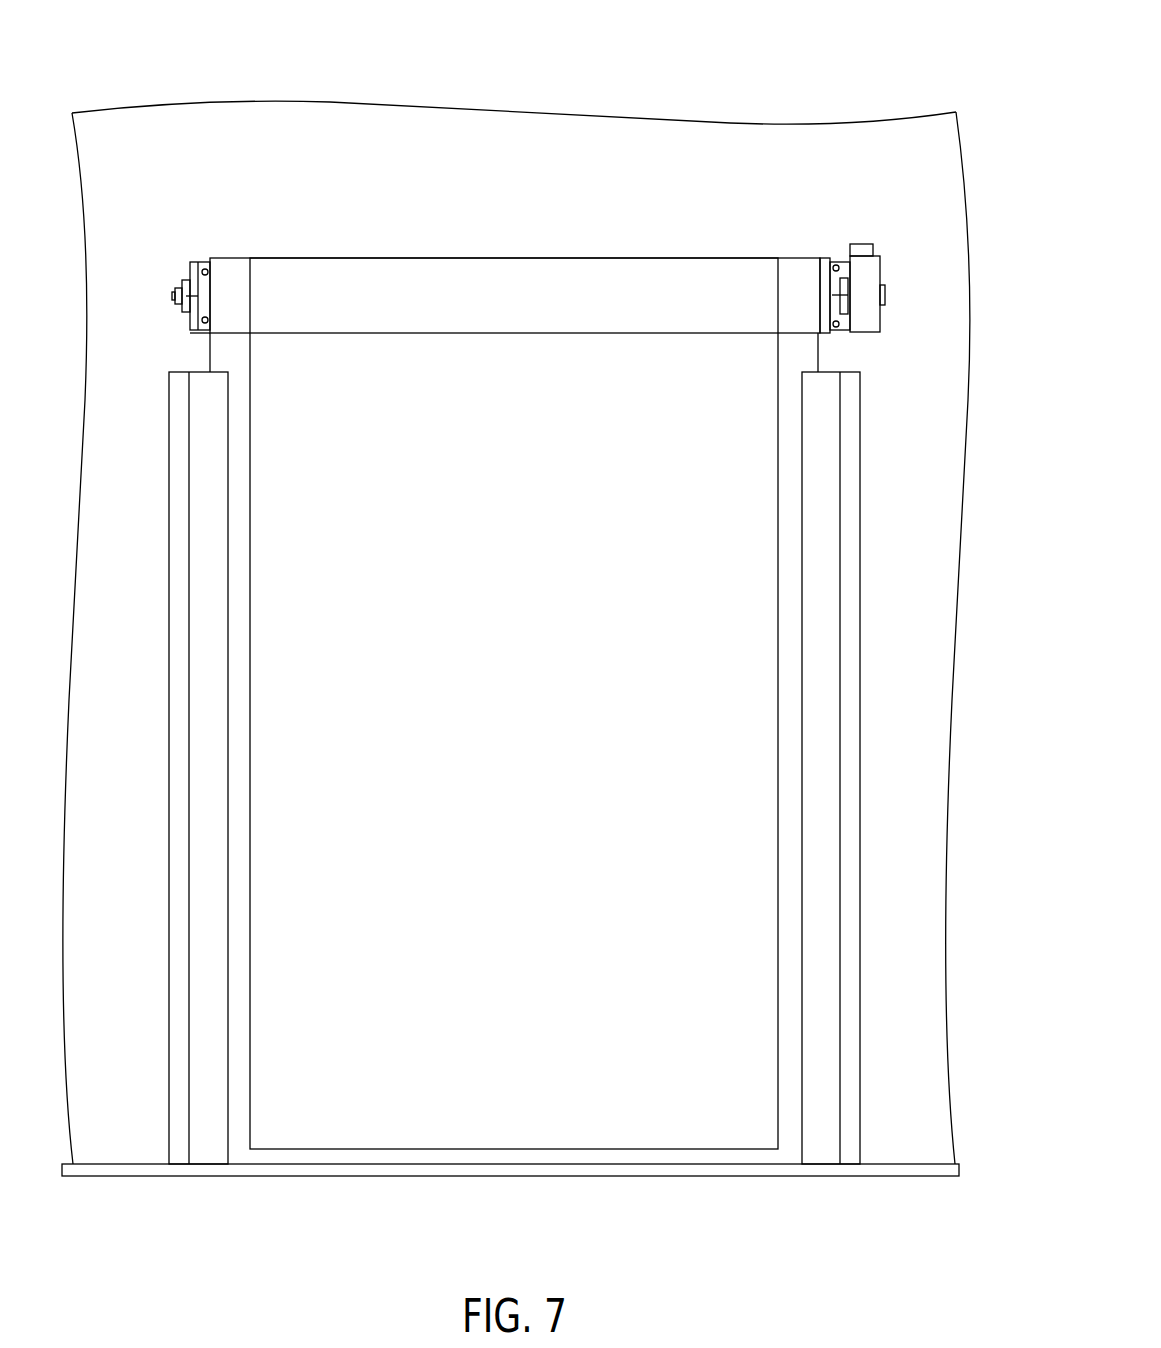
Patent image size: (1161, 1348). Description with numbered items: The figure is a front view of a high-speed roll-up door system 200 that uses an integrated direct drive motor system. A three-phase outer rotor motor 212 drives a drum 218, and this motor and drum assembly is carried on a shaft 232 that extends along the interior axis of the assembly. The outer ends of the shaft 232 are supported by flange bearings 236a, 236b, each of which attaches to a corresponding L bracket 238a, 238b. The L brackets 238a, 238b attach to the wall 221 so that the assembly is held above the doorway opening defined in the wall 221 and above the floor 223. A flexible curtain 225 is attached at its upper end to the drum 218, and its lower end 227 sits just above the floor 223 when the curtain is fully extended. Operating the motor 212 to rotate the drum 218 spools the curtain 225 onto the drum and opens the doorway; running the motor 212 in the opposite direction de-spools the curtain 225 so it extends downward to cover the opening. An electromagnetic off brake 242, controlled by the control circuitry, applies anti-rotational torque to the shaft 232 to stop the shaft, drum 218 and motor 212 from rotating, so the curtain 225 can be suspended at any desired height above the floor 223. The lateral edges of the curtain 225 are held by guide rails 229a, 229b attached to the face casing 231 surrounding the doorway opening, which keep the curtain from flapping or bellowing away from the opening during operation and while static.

The high-speed roll-up door system 200 is at (724, 86).
The wall 221 is at (143, 128).
The drum 218 is at (494, 268).
The L bracket 238a is at (201, 262).
The L bracket 238b is at (832, 262).
The shaft 232 is at (177, 297).
The flange bearing 236a is at (188, 300).
The flange bearing 236b is at (842, 295).
The three-phase outer rotor motor 212 is at (195, 333).
The electromagnetic off brake 242 is at (860, 272).
The flexible curtain 225 is at (743, 714).
The guide rail 229a is at (210, 830).
The guide rail 229b is at (820, 830).
The face casing 231 is at (180, 1040).
The floor 223 is at (893, 1164).
The lower end 227 is at (515, 1150).